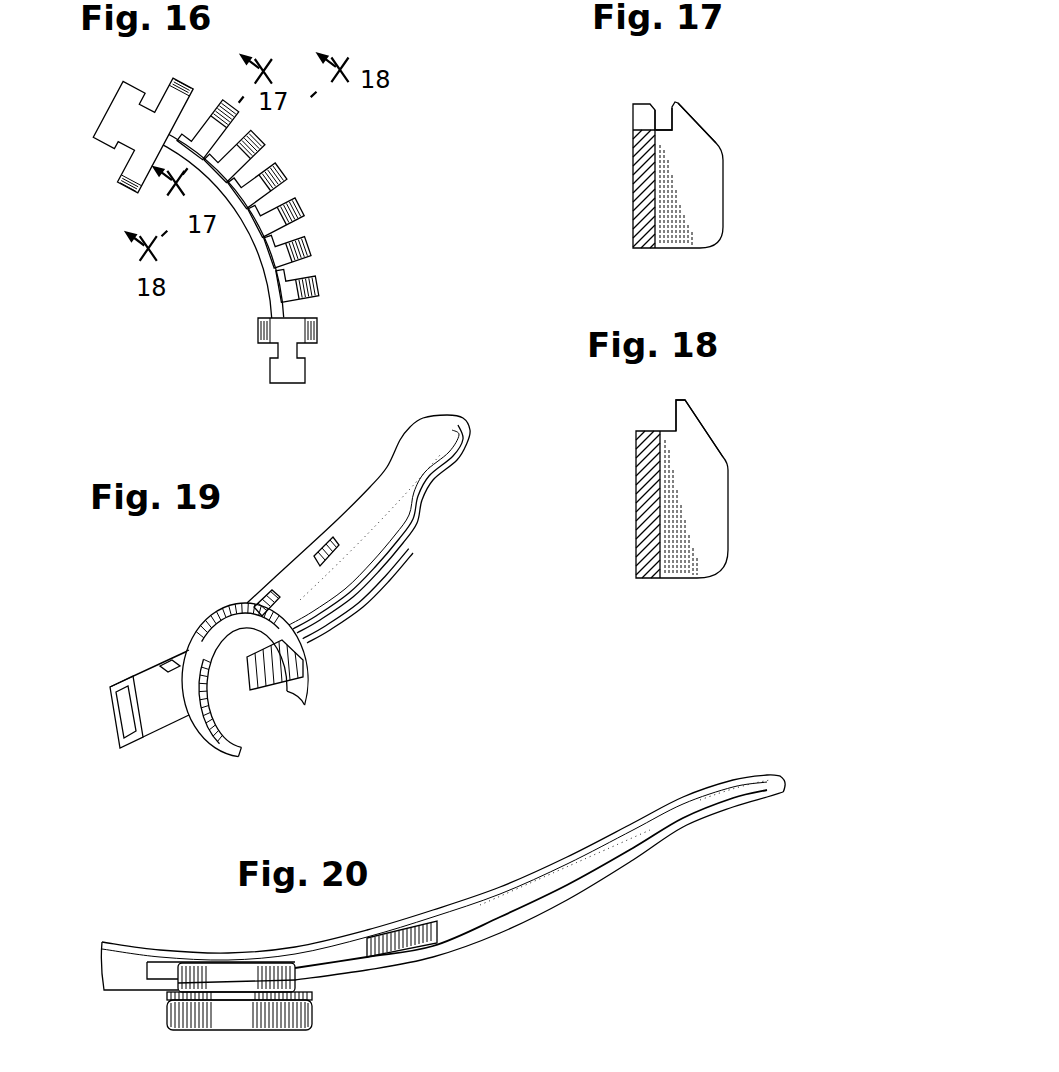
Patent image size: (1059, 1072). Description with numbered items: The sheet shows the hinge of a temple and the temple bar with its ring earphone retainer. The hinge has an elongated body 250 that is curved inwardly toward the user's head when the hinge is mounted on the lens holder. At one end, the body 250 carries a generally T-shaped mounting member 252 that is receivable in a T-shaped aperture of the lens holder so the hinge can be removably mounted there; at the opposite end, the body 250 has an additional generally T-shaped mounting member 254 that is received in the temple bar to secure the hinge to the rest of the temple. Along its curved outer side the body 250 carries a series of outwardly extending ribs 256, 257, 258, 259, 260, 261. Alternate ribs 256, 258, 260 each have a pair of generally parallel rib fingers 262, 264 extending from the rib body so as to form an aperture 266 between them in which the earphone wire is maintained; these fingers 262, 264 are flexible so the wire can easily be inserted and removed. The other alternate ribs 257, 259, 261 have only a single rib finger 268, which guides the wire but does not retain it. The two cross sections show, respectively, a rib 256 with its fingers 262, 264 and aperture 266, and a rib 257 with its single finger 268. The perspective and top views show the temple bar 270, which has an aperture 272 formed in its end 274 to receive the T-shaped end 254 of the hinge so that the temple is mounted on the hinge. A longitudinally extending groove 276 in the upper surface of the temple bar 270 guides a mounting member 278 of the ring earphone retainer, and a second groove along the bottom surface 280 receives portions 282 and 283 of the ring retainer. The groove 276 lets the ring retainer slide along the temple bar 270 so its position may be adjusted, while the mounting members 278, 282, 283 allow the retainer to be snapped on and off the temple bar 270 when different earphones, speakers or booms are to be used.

In FIG. 16, the hinge body 250 is at (258, 284).
In FIG. 16, the T-shaped mounting member 252 is at (120, 88).
In FIG. 16, the T-shaped mounting member 254 is at (285, 384).
In FIG. 16, the rib 256 is at (216, 107).
In FIG. 17, the rib 256 is at (705, 202).
In FIG. 16, the rib 257 is at (262, 150).
In FIG. 18, the rib 257 is at (713, 540).
In FIG. 16, the rib 258 is at (287, 183).
In FIG. 16, the rib 259 is at (303, 218).
In FIG. 16, the rib 260 is at (311, 256).
In FIG. 16, the rib 261 is at (318, 296).
In FIG. 17, the rib finger 262 is at (643, 103).
In FIG. 17, the rib finger 264 is at (690, 120).
In FIG. 17, the aperture 266 is at (665, 112).
In FIG. 18, the rib finger 268 is at (693, 417).
In FIG. 19, the temple bar 270 is at (392, 542).
In FIG. 19, the aperture 272 is at (118, 706).
In FIG. 19, the end 274 is at (148, 738).
In FIG. 19, the groove 276 is at (262, 597).
In FIG. 19, the mounting member 278 is at (198, 620).
In FIG. 19, the bottom surface 280 is at (322, 628).
In FIG. 19, the mounting member 282 is at (192, 728).
In FIG. 19, the mounting member 283 is at (264, 679).